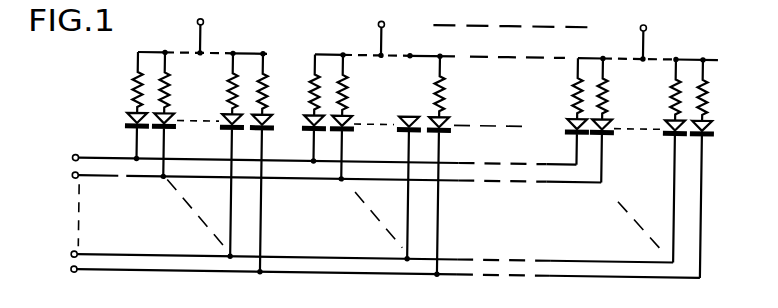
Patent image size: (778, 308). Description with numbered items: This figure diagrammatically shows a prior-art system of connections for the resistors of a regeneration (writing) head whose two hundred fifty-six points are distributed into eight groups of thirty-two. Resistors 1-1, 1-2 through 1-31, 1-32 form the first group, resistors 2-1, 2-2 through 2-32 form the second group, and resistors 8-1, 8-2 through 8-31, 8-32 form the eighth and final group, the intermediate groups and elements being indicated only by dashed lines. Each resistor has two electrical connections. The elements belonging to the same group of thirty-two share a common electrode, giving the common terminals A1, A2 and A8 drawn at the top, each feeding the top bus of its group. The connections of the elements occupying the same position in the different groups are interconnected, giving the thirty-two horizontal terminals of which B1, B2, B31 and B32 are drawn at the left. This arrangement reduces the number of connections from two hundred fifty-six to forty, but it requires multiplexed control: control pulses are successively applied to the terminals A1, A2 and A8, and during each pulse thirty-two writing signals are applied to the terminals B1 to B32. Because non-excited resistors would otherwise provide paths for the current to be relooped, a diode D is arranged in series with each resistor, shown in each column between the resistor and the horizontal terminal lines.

The resistor 1-1 is at (134, 81).
The resistor 1-2 is at (170, 91).
The resistor 1-31 is at (229, 98).
The resistor 1-32 is at (265, 93).
The resistor 2-1 is at (312, 81).
The resistor 2-2 is at (347, 88).
The resistor 2-32 is at (443, 89).
The resistor 8-1 is at (573, 89).
The resistor 8-2 is at (608, 84).
The resistor 8-31 is at (673, 95).
The resistor 8-32 is at (708, 89).
The diode D is at (131, 119).
The common terminal A1 is at (196, 21).
The common terminal A2 is at (378, 21).
The common terminal A8 is at (640, 20).
The terminal B1 is at (74, 158).
The terminal B2 is at (73, 175).
The terminal B31 is at (74, 255).
The terminal B32 is at (70, 271).